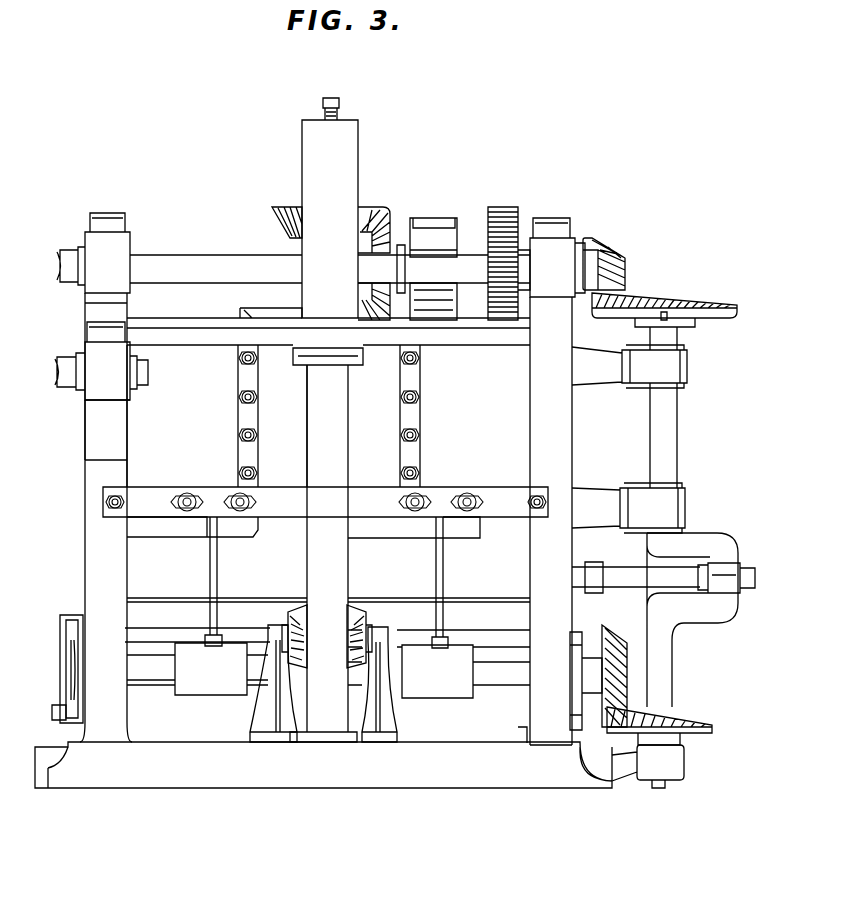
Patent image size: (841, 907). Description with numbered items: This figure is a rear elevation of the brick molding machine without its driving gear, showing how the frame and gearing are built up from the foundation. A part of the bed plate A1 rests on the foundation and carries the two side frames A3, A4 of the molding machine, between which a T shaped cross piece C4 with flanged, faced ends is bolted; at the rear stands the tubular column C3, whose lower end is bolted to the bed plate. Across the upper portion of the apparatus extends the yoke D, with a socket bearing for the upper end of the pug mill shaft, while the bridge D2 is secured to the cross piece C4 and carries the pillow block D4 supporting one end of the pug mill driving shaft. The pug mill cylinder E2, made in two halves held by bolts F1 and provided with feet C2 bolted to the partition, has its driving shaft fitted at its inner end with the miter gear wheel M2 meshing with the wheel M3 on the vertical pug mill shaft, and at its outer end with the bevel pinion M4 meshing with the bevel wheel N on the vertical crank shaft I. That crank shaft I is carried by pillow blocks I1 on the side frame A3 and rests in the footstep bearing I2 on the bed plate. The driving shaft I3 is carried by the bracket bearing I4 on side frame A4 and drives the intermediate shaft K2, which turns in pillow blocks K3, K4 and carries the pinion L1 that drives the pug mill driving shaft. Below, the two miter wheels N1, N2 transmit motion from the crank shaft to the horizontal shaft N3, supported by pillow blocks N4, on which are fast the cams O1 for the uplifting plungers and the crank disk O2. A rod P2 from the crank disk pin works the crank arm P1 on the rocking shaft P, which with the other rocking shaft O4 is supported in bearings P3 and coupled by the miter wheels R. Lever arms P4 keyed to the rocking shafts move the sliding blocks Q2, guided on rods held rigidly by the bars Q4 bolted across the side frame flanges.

The bed plate part A1 is at (190, 772).
The side frame A4 is at (92, 518).
The bracket bearing I4 is at (100, 422).
The pillow block K4 is at (122, 242).
The driving shaft I3 is at (72, 378).
The intermediate shaft K2 is at (245, 266).
The yoke D is at (348, 182).
The miter gear wheel M3 is at (296, 209).
The miter gear wheel M2 is at (398, 222).
The pillow block D4 is at (445, 239).
The bridge D2 is at (445, 301).
The pinion wheel L1 is at (498, 262).
The pillow block K3 is at (562, 240).
The side frame A3 is at (558, 452).
The bevel gear pinion wheel M4 is at (612, 253).
The bevel gear wheel N is at (705, 300).
The crank shaft I is at (668, 460).
The pillow block I1 is at (688, 377).
The horizontal shaft N3 is at (522, 680).
The miter wheel N2 is at (614, 636).
The pillow block N4 is at (576, 685).
The miter wheel N1 is at (700, 726).
The footstep bearing I2 is at (675, 768).
The T shaped cross piece C4 is at (202, 334).
The pug mill cylinder E2 is at (328, 416).
The bolt F1 is at (419, 439).
The tubular column C3 is at (318, 568).
The bar Q4 is at (325, 486).
The sliding block Q2 is at (190, 536).
The foot C2 is at (328, 586).
The lever arm P4 is at (212, 560).
The rocking shaft P is at (175, 634).
The rocking shaft O4 is at (496, 640).
The cam O1 is at (192, 686).
The bearing P3 is at (272, 710).
The miter wheel R is at (295, 612).
The crank disk O2 is at (63, 630).
The crank arm P1 is at (68, 655).
The rod P2 is at (60, 712).